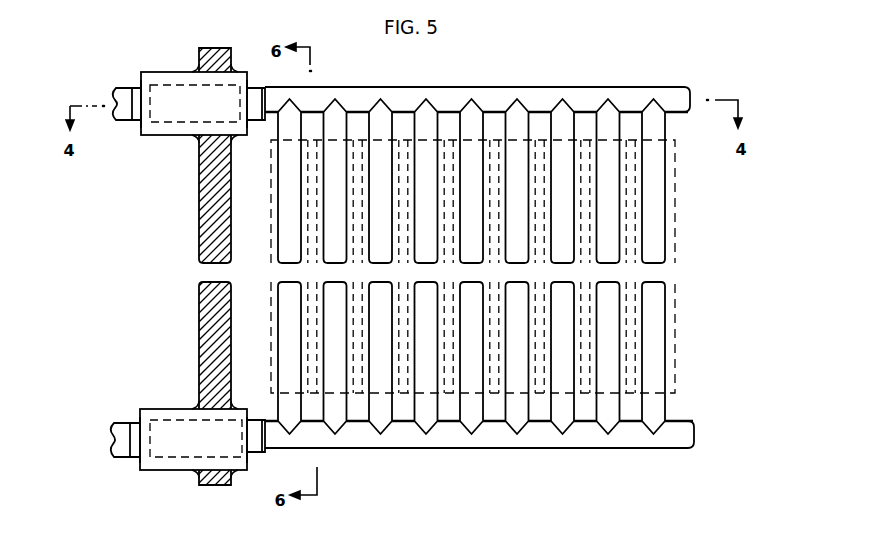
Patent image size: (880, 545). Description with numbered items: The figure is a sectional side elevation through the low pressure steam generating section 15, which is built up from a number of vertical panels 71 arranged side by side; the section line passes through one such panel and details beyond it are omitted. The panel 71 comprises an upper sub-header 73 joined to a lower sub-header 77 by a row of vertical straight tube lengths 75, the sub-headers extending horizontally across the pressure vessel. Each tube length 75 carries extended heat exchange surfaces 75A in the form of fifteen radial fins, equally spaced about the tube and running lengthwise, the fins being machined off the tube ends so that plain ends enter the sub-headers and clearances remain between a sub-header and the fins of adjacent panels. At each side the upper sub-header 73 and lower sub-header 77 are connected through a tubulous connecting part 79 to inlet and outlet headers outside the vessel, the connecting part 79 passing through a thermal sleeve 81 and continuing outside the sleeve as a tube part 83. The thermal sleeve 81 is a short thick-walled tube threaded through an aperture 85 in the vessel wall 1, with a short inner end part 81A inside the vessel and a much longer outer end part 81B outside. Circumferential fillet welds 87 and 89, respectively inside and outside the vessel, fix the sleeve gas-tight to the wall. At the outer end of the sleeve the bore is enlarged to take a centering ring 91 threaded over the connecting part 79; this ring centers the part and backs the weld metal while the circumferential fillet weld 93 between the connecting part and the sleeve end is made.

The mounting bar 1 is at (205, 233).
The low pressure steam generating section 15 is at (658, 254).
The vertical panel 71 is at (662, 128).
The upper sub-header 73 is at (473, 97).
The vertical straight tube length 75 is at (615, 340).
The extended heat exchange surfaces 75A is at (628, 207).
The lower sub-header 77 is at (555, 437).
The tubulous connecting part 79 is at (254, 91).
The thermal sleeve 81 is at (175, 127).
The inner end part of thermal sleeve 81A is at (237, 123).
The outer end part of thermal sleeve 81B is at (157, 72).
The tube part 83 is at (122, 117).
The aperture 85 is at (217, 55).
The circumferential fillet weld 87 is at (233, 70).
The circumferential fillet weld 89 is at (197, 70).
The centering ring 91 is at (152, 100).
The circumferential fillet weld 93 is at (138, 84).